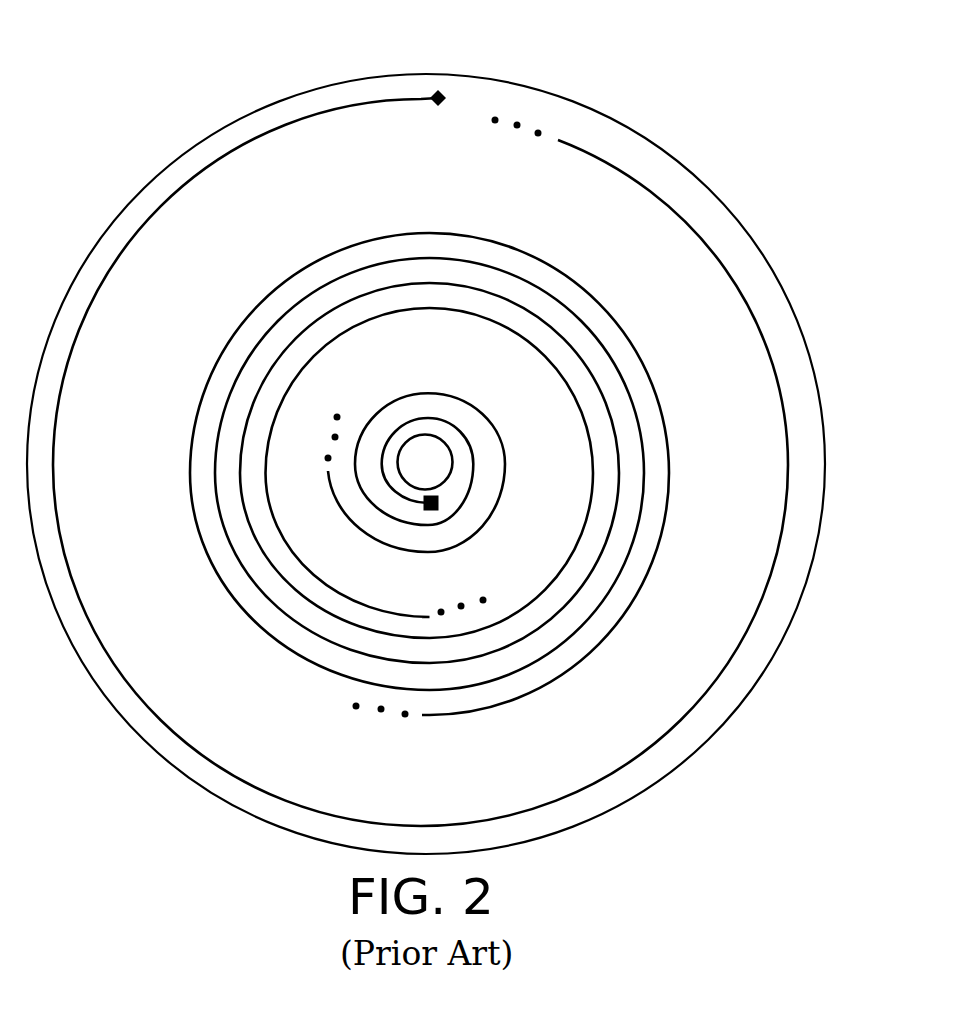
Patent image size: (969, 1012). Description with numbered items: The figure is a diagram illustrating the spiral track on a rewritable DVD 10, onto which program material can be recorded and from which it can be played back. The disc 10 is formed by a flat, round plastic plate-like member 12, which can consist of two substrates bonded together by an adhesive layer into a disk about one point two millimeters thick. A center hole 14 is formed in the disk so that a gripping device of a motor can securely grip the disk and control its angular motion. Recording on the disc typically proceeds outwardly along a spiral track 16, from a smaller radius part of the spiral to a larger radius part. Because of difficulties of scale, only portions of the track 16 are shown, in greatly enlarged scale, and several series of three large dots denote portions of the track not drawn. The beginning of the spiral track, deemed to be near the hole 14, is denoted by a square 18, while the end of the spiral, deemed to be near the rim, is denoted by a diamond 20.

The rewritable DVD 10 is at (447, 33).
The plastic plate-like member 12 is at (637, 130).
The center hole 14 is at (452, 462).
The spiral track 16 is at (477, 406).
The square 18 is at (431, 510).
The diamond 20 is at (441, 91).